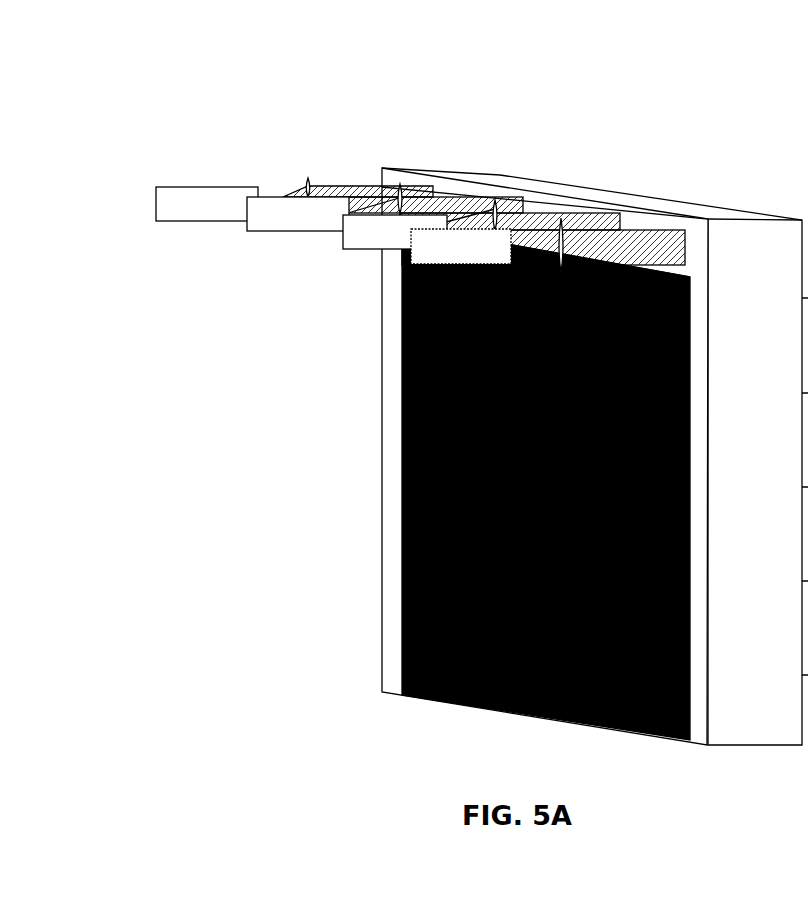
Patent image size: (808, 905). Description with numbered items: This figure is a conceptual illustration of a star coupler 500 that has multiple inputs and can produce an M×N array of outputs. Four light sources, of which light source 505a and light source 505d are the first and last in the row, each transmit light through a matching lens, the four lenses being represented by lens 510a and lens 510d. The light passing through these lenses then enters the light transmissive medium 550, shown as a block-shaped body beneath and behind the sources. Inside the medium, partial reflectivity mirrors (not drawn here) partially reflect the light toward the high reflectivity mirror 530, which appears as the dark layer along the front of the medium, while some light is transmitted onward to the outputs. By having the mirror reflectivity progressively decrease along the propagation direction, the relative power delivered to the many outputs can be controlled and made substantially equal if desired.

The star coupler 500 is at (374, 65).
The light source 505a is at (471, 264).
The light source 505d is at (197, 221).
The lens 510a is at (561, 218).
The lens 510d is at (308, 178).
The high reflectivity mirror 530 is at (403, 466).
The light transmissive medium 550 is at (647, 195).